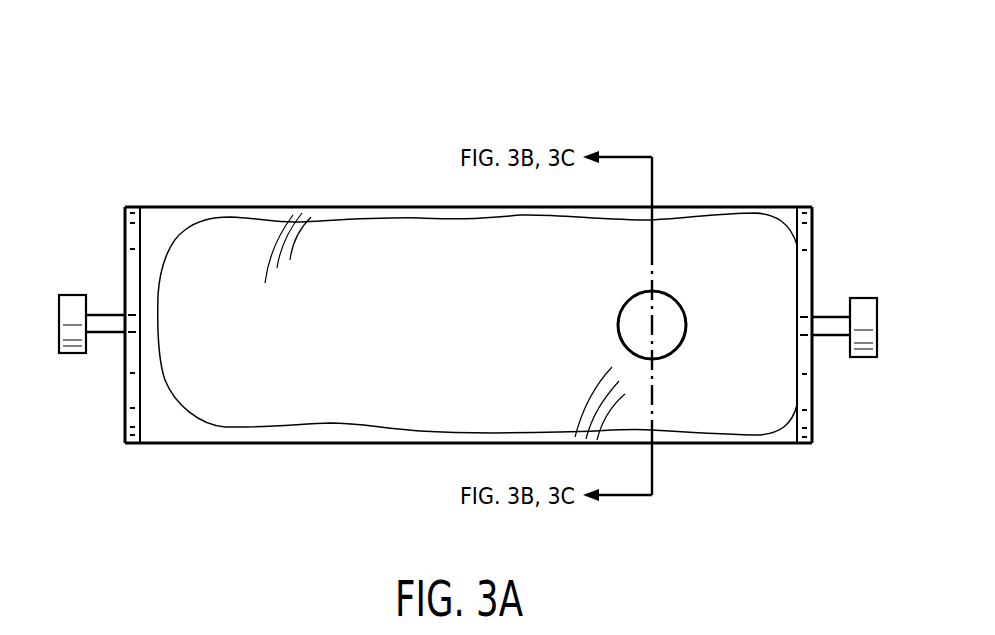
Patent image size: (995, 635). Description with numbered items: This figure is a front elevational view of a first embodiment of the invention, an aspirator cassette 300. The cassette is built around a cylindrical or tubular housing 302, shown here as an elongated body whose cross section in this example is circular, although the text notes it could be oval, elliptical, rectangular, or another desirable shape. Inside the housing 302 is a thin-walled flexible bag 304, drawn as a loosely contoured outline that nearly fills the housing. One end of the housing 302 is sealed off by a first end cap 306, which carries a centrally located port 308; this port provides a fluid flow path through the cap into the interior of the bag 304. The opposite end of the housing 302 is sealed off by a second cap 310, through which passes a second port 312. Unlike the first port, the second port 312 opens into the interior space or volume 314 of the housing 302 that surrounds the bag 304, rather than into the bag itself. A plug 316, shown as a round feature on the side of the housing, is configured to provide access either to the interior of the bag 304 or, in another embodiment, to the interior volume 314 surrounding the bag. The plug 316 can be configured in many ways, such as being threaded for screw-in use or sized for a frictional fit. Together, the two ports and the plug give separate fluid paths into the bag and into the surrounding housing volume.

The aspirator cassette 300 is at (718, 113).
The housing 302 is at (725, 207).
The flexible bag 304 is at (180, 238).
The first end cap 306 is at (812, 237).
The port 308 is at (863, 298).
The second cap 310 is at (124, 272).
The second port 312 is at (75, 353).
The interior space or volume 314 is at (155, 422).
The plug 316 is at (680, 348).